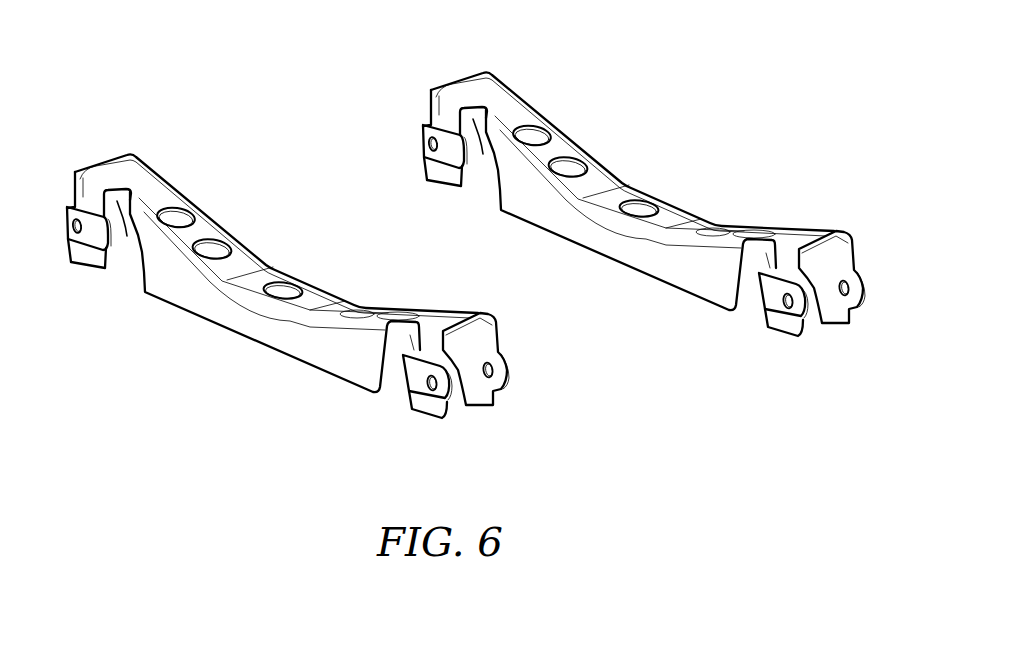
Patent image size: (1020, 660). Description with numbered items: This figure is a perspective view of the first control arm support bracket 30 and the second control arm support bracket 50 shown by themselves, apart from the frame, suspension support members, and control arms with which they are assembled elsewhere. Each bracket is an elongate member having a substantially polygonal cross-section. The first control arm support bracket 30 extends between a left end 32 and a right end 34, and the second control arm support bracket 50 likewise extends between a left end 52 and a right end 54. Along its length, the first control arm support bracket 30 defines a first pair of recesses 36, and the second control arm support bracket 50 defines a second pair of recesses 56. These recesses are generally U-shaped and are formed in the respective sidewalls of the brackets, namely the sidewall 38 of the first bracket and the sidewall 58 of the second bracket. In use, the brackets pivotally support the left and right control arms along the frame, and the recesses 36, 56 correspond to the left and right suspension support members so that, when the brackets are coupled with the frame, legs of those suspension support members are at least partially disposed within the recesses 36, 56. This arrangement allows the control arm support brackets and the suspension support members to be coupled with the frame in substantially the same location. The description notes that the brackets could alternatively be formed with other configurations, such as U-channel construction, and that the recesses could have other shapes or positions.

The first control arm support bracket 30 is at (275, 325).
The left end 32 is at (423, 430).
The right end 34 is at (82, 280).
The first pair of recesses 36 is at (127, 270).
The sidewall 38 is at (323, 354).
The second control arm support bracket 50 is at (658, 191).
The left end 52 is at (826, 254).
The right end 54 is at (487, 103).
The second pair of recesses 56 is at (612, 235).
The sidewall 58 is at (628, 201).